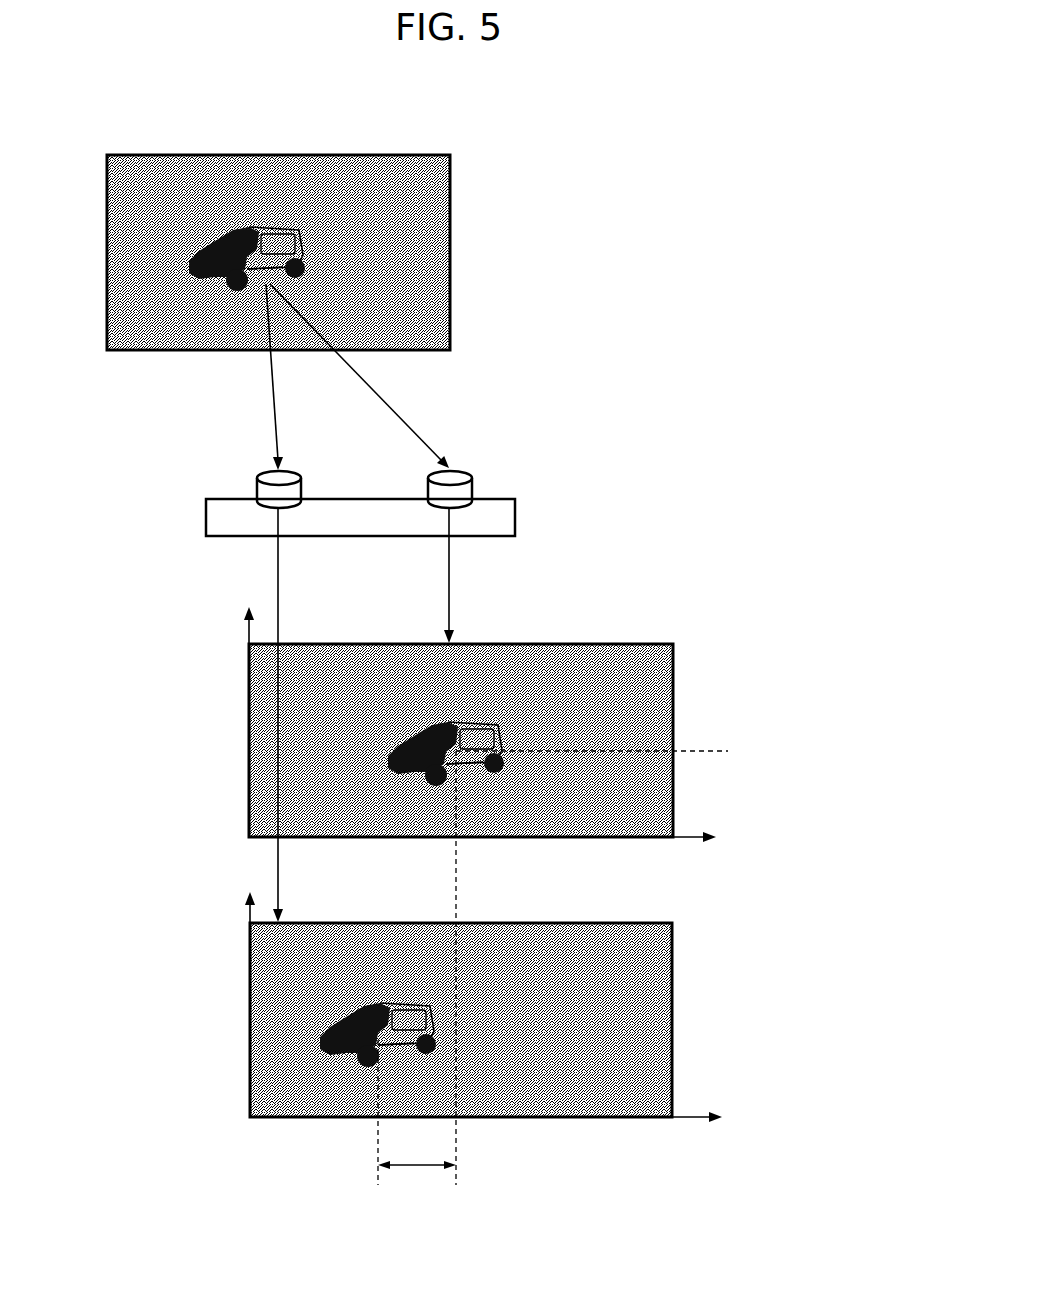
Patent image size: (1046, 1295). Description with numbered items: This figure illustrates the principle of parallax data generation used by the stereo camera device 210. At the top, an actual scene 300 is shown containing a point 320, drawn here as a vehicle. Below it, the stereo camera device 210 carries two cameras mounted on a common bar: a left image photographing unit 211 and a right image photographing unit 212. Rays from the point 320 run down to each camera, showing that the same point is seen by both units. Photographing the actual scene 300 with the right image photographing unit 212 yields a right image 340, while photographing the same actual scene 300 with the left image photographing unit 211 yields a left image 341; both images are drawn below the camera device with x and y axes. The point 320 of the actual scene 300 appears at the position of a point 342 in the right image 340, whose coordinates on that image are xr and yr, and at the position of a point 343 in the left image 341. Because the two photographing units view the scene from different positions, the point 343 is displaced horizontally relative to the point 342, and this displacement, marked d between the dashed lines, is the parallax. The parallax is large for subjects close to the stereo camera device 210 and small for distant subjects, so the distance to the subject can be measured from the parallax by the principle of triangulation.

The actual scene 300 is at (451, 197).
The point in the actual scene 320 is at (294, 232).
The stereo camera device 210 is at (206, 514).
The left image photographing unit 211 is at (301, 489).
The right image photographing unit 212 is at (462, 471).
The right image 340 is at (673, 679).
The left image 341 is at (672, 966).
The point in the right image 342 is at (495, 734).
The point in the left image 343 is at (422, 1004).